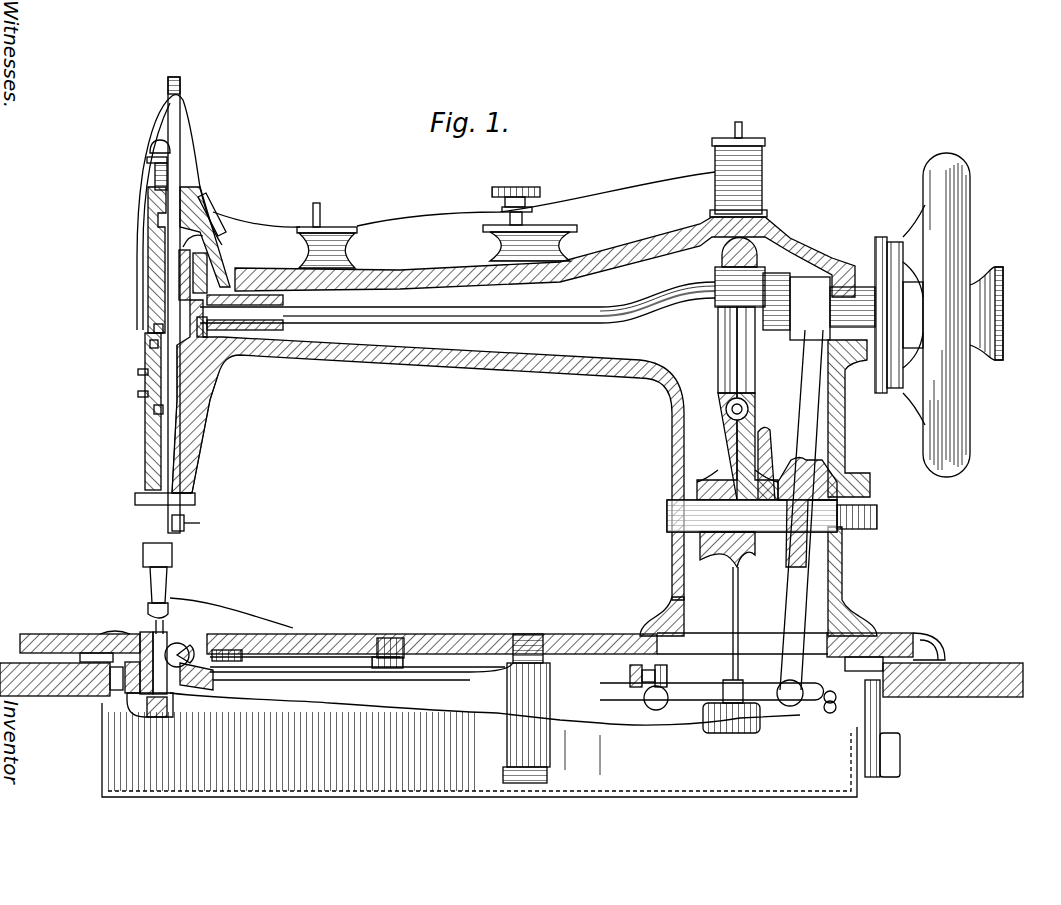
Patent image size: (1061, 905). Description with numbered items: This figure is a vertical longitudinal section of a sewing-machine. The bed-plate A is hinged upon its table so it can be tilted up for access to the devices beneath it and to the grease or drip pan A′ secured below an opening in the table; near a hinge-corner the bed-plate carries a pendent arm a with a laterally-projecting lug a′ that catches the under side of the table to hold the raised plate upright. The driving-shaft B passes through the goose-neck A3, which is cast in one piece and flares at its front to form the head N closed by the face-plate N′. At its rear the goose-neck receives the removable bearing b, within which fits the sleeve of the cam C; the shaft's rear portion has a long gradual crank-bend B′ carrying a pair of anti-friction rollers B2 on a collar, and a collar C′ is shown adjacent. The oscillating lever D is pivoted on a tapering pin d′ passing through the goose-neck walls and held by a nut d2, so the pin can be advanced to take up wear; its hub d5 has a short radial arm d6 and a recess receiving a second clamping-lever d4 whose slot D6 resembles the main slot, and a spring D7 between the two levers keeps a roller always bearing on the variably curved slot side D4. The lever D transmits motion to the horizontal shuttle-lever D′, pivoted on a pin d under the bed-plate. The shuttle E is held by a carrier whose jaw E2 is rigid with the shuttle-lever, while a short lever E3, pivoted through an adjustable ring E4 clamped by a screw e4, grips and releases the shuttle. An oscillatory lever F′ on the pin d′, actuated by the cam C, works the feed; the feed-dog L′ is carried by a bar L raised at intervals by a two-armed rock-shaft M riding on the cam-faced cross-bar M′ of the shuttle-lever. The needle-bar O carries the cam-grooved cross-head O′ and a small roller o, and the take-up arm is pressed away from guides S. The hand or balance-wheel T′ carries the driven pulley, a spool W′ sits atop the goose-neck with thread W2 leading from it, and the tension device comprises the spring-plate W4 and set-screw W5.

The bed-plate A is at (511, 654).
The grease or drip pan A′ is at (479, 750).
The goose-neck A3 is at (524, 426).
The driving-shaft B is at (457, 310).
The crank-bend B′ is at (657, 284).
The anti-friction rollers B2 is at (740, 270).
The removable bearing b is at (856, 268).
The cam C is at (872, 312).
The clutch collar C′ is at (782, 314).
The oscillating lever D is at (722, 425).
The shuttle-lever D′ is at (485, 694).
The side of cam-slot D4 is at (715, 350).
The slot of clamping-lever D6 is at (757, 350).
The spring D7 is at (727, 405).
The pin d is at (526, 698).
The tapering pin d′ is at (667, 510).
The nut d2 is at (867, 504).
The clamping-lever d4 is at (746, 384).
The hub d5 is at (745, 555).
The radial arm d6 is at (773, 460).
The shuttle E is at (197, 648).
The jaw E2 is at (222, 640).
The short lever E3 is at (312, 655).
The ring E4 is at (405, 663).
The screw e4 is at (390, 640).
The oscillatory lever F′ is at (803, 592).
The bar L is at (138, 692).
The feed-dog L′ is at (143, 632).
The two-armed rock-shaft M is at (630, 672).
The cross-bar M′ is at (655, 708).
The head N is at (248, 400).
The face-plate N′ is at (153, 318).
The needle-bar O is at (175, 150).
The cam-grooved cross-head O′ is at (179, 268).
The roller o is at (149, 344).
The guides S is at (138, 372).
The hand or balance-wheel T′ is at (939, 315).
The spool W′ is at (749, 169).
The thread W2 is at (260, 222).
The spring-plate W4 is at (494, 227).
The set-screw W5 is at (530, 201).
The pendent arm a is at (882, 717).
The laterally-projecting lug a′ is at (900, 757).